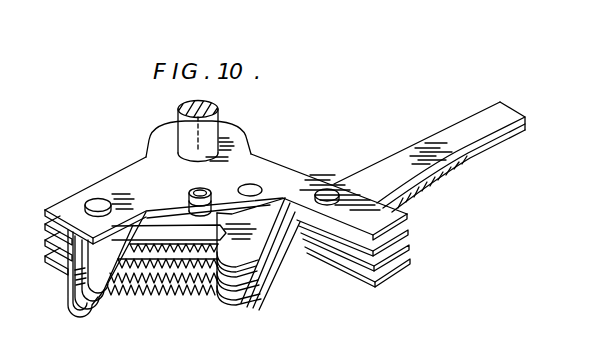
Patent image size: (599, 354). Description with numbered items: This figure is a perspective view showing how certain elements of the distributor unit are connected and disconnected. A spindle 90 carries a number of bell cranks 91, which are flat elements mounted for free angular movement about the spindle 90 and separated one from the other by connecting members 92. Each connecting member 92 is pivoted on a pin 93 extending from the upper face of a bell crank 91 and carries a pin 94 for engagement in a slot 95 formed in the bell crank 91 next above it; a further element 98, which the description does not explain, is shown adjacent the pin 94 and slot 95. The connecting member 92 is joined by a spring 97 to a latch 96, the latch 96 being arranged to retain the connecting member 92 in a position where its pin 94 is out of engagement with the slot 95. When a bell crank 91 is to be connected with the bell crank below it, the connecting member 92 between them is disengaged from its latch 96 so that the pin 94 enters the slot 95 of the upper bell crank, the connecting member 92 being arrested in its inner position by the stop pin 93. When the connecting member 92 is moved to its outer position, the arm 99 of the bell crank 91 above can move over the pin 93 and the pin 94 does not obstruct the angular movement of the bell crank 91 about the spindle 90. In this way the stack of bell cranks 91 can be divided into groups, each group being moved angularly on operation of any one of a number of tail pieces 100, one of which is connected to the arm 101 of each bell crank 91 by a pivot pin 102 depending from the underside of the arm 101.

The spindle 90 is at (207, 125).
The bell crank 91 is at (247, 155).
The connecting member 92 is at (86, 281).
The pin 93 is at (90, 201).
The pin 94 is at (204, 194).
The slot 95 is at (193, 199).
The latch 96 is at (244, 249).
The spring 97 is at (140, 281).
The ring top 98 is at (188, 186).
The arm 99 is at (46, 233).
The tail piece 100 is at (472, 152).
The arm 101 is at (409, 236).
The pivot pin 102 is at (329, 192).